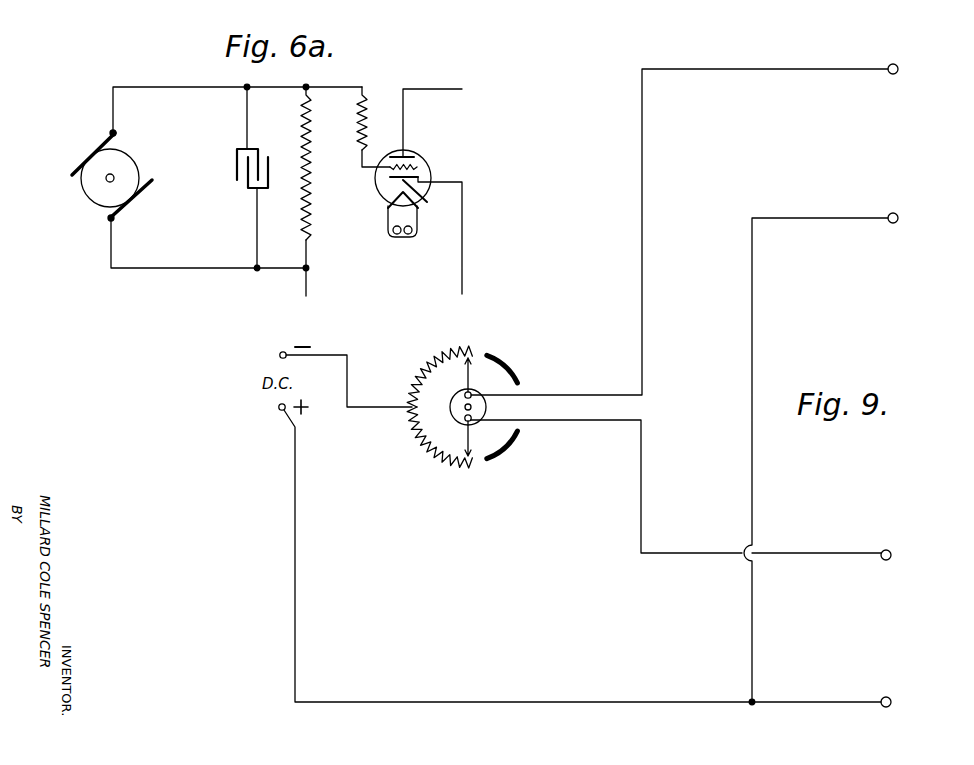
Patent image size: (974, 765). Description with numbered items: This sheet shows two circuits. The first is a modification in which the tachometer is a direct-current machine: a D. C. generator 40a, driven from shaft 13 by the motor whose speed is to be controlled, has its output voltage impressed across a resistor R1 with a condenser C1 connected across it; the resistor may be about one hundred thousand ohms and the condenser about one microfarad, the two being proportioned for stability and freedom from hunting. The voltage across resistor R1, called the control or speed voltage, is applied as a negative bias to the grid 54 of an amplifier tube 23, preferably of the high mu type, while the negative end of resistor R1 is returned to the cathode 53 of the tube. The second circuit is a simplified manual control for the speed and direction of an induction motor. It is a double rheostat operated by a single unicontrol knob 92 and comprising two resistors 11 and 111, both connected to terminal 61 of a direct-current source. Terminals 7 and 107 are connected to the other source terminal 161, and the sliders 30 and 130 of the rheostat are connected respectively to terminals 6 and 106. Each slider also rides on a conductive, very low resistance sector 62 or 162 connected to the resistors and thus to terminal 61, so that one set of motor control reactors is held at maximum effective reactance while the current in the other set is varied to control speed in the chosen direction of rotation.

In FIG. 6A, the direct-current generator 40a is at (138, 162).
In FIG. 6A, the shaft 13 is at (106, 181).
In FIG. 6A, the condenser C1 is at (236, 170).
In FIG. 6A, the resistor R1 is at (313, 200).
In FIG. 6A, the amplifier tube 23 is at (410, 152).
In FIG. 6A, the grid 54 is at (422, 170).
In FIG. 6A, the cathode 53 is at (422, 204).
In FIG. 9, the terminal 61 is at (281, 351).
In FIG. 9, the terminal 161 is at (278, 408).
In FIG. 9, the resistor 11 is at (438, 373).
In FIG. 9, the resistor 111 is at (431, 441).
In FIG. 9, the unicontrol knob 92 is at (455, 392).
In FIG. 9, the slider 30 is at (470, 377).
In FIG. 9, the slider 130 is at (470, 437).
In FIG. 9, the conductive sector 62 is at (510, 366).
In FIG. 9, the conductive sector 162 is at (506, 450).
In FIG. 9, the terminal 6 is at (899, 72).
In FIG. 9, the terminal 7 is at (899, 220).
In FIG. 9, the terminal 106 is at (891, 552).
In FIG. 9, the terminal 107 is at (891, 699).